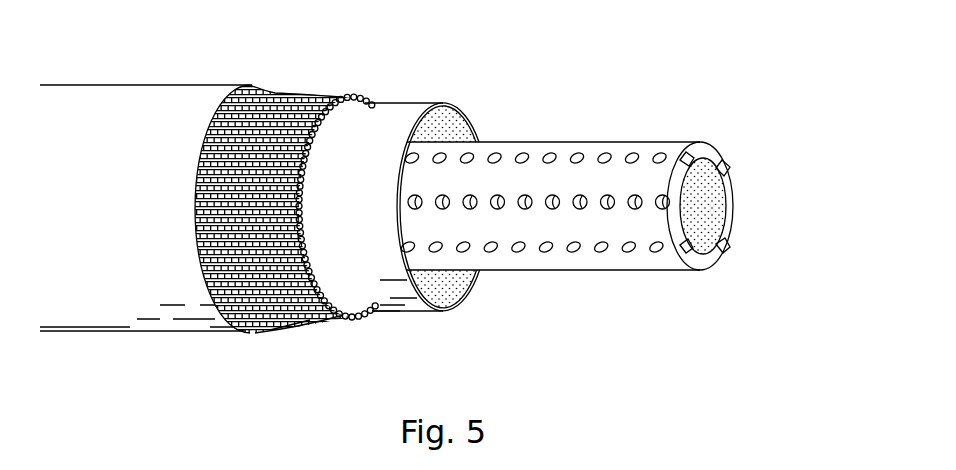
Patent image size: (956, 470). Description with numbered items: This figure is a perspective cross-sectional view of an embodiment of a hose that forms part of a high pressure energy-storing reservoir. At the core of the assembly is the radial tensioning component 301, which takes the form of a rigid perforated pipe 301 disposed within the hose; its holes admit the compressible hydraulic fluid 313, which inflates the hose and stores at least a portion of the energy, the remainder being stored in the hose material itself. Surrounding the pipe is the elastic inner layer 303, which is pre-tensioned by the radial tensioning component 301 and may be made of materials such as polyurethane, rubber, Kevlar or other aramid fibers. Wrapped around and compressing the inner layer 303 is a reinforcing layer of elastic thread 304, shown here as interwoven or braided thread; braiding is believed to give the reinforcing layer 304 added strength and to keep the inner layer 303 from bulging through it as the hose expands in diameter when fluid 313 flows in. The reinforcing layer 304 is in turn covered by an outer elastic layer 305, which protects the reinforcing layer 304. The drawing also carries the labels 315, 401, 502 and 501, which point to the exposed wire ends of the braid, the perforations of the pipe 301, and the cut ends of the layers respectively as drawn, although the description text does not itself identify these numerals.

The elastic layer 305 is at (187, 97).
The reinforcing layer of elastic thread 304 is at (277, 93).
The braid wire ends 315 is at (355, 93).
The elastic inner layer 303 is at (400, 110).
The hydraulic fluid 313 is at (452, 117).
The perforations 401 is at (522, 157).
The radial tensioning component 301 is at (622, 153).
The braid cut end 502 is at (300, 322).
The tube end portion 501 is at (370, 313).